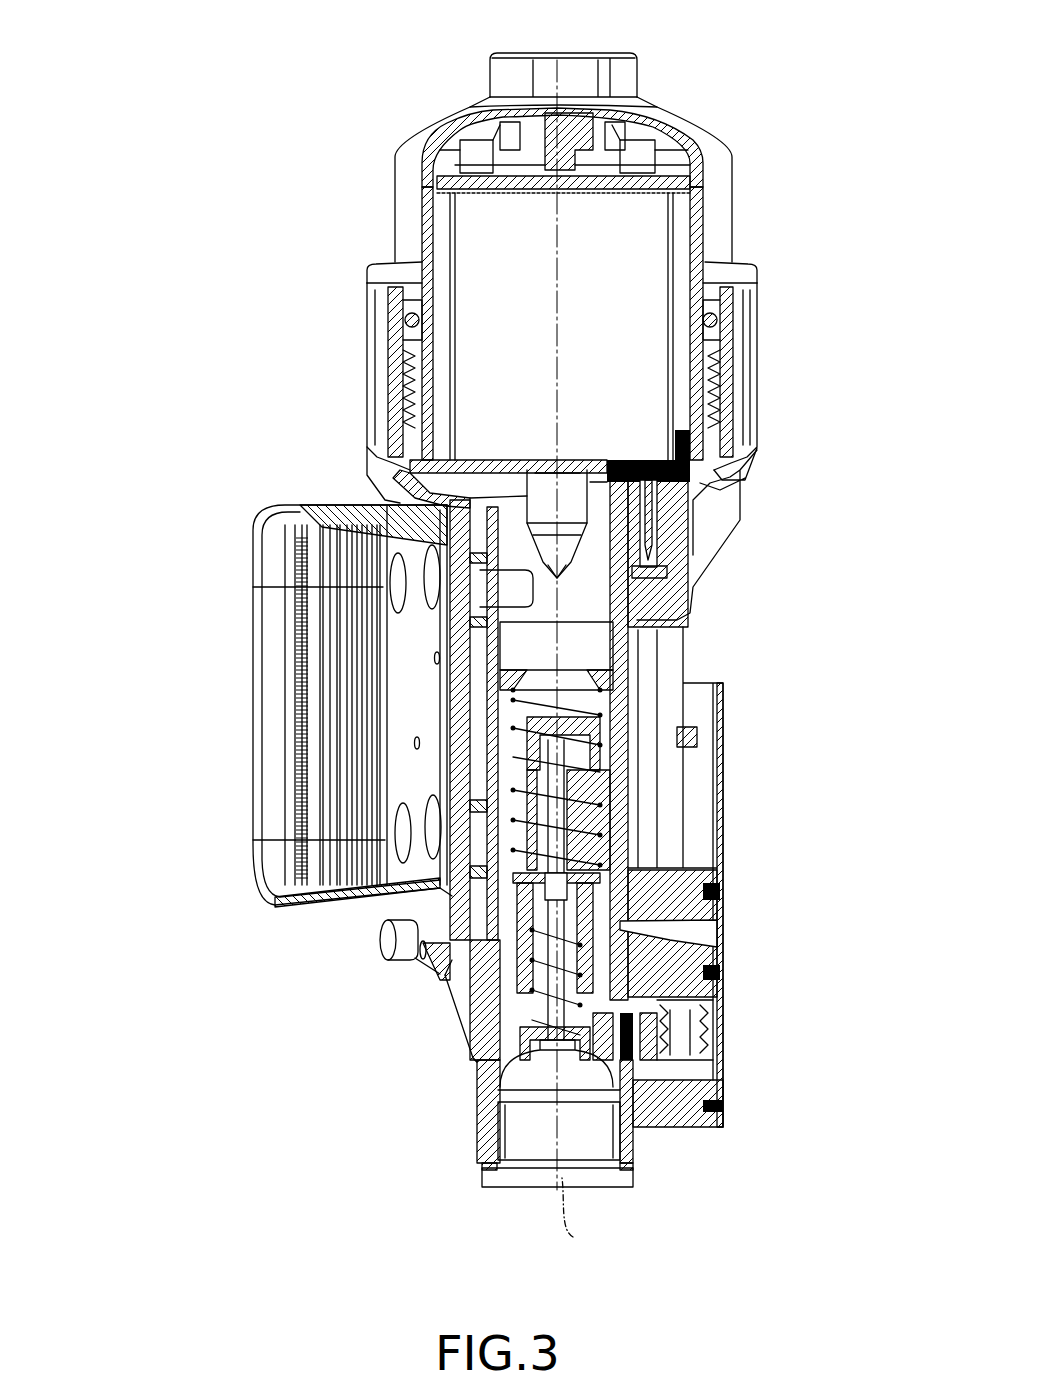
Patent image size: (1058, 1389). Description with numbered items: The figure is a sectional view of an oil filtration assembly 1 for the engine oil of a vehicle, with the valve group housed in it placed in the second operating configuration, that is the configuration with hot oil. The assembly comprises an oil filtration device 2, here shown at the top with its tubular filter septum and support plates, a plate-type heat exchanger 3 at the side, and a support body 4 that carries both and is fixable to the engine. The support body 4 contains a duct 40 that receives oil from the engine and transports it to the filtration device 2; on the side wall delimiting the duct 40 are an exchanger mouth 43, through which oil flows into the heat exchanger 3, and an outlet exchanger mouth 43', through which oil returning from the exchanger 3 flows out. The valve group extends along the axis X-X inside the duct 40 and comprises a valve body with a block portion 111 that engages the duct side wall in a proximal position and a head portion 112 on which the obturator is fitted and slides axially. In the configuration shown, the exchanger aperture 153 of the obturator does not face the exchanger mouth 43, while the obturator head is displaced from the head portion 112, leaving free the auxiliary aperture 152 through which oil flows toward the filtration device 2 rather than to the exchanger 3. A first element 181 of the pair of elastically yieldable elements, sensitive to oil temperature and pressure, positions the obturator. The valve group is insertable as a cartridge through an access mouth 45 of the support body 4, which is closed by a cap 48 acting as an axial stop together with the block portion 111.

The oil filtration assembly 1 is at (100, 143).
The oil filtration device 2 is at (287, 310).
The heat exchanger 3 is at (205, 718).
The support body 4 is at (573, 635).
The duct 40 is at (743, 477).
The exchanger mouth 43 is at (318, 946).
The outlet exchanger mouth 43' is at (364, 487).
The access mouth 45 is at (497, 1152).
The cap 48 is at (600, 1135).
The block portion 111 is at (663, 1125).
The head portion 112 is at (573, 778).
The auxiliary aperture 152 is at (625, 687).
The exchanger aperture 153 is at (480, 838).
The first element 181 is at (725, 953).